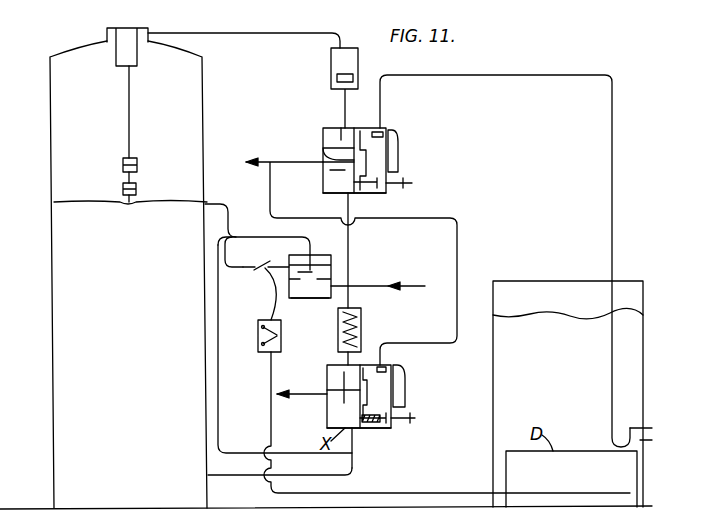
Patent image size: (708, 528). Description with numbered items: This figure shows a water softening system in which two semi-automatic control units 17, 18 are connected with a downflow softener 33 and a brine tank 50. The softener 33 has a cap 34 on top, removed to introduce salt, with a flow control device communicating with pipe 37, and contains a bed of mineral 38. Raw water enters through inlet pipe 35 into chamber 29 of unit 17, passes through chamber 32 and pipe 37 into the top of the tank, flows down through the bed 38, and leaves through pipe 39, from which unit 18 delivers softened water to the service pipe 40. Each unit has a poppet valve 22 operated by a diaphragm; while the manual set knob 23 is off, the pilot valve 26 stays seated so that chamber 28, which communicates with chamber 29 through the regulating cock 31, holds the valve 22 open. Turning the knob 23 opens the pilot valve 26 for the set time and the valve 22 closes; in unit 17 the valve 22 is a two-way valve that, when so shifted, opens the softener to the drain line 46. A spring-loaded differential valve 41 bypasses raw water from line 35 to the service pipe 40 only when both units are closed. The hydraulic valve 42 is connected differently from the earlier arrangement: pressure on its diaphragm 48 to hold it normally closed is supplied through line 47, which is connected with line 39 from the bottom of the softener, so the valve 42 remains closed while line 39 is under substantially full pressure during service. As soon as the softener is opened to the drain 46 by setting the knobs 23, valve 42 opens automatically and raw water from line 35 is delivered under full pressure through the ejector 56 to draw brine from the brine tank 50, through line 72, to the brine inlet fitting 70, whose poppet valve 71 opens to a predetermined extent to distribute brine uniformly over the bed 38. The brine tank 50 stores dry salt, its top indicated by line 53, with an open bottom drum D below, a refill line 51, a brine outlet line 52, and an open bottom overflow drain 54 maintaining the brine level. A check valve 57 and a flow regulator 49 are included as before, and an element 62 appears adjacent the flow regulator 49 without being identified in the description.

The control unit 17 is at (337, 124).
The control unit 18 is at (370, 436).
The poppet valve 22 is at (323, 133).
The manual set knob 23 is at (399, 158).
The pilot valve 26 is at (380, 132).
The chamber 28 is at (392, 145).
The chamber 29 is at (330, 193).
The regulating cock 31 is at (412, 183).
The chamber 32 is at (323, 177).
The water softener 33 is at (203, 137).
The cap 34 is at (115, 32).
The raw water inlet pipe 35 is at (403, 288).
The pipe 37 is at (255, 34).
The bed of mineral 38 is at (70, 199).
The pipe 39 is at (233, 477).
The service pipe 40 is at (302, 395).
The spring-loaded differential valve 41 is at (362, 326).
The hydraulic valve 42 is at (298, 299).
The drain line 46 is at (263, 168).
The line 47 is at (220, 395).
The diaphragm 48 is at (318, 262).
The flow regulator 49 is at (358, 62).
The brine tank 50 is at (493, 385).
The refill line 51 is at (612, 131).
The brine outlet line 52 is at (383, 493).
The top of salt bed 53 is at (545, 315).
The overflow drain 54 is at (615, 420).
The ejector 56 is at (254, 274).
The check valve 57 is at (258, 339).
The switch 62 is at (337, 76).
The brine inlet fitting 70 is at (137, 189).
The poppet valve 71 is at (137, 178).
The line 72 is at (230, 218).